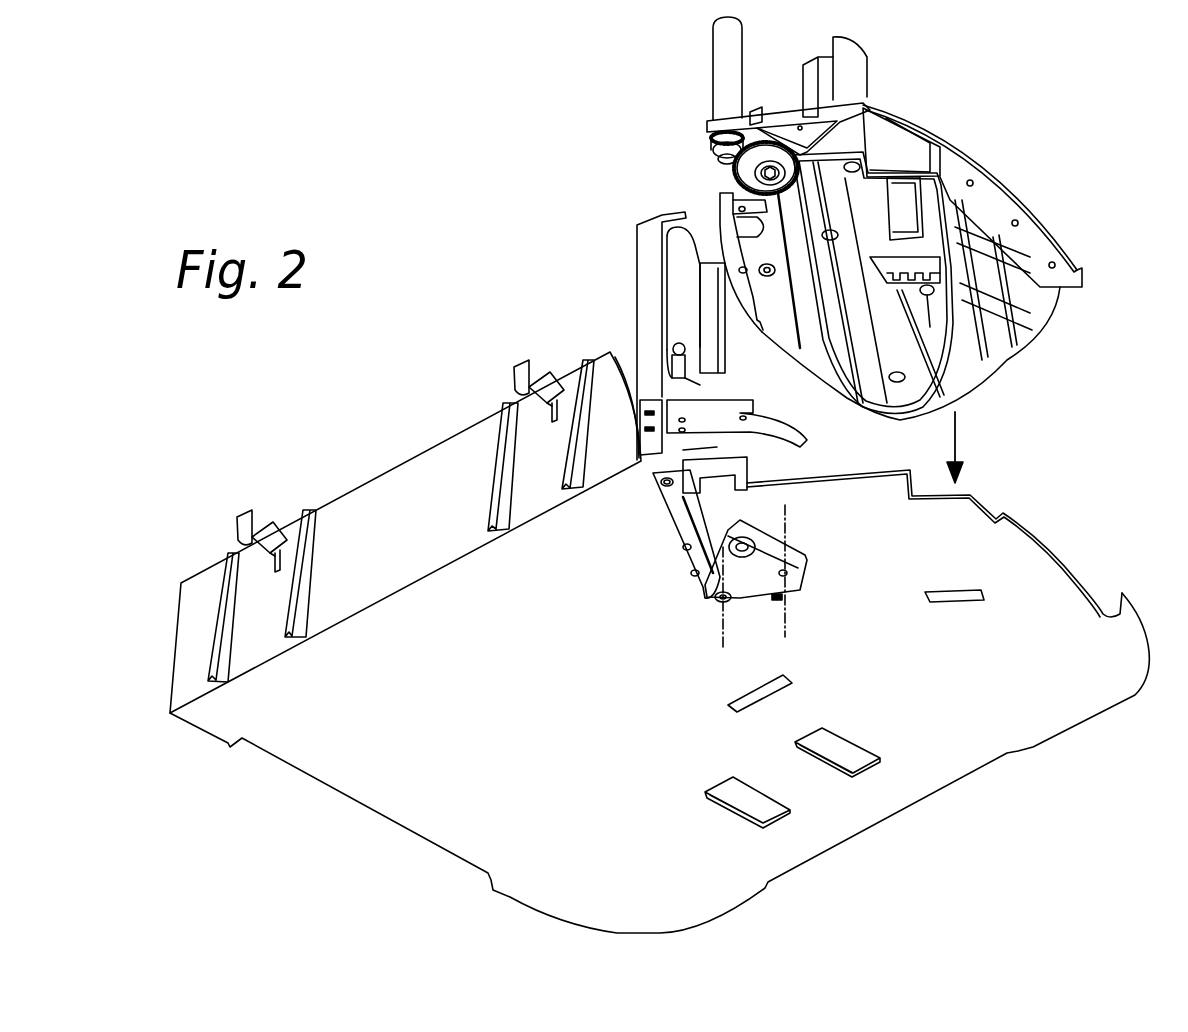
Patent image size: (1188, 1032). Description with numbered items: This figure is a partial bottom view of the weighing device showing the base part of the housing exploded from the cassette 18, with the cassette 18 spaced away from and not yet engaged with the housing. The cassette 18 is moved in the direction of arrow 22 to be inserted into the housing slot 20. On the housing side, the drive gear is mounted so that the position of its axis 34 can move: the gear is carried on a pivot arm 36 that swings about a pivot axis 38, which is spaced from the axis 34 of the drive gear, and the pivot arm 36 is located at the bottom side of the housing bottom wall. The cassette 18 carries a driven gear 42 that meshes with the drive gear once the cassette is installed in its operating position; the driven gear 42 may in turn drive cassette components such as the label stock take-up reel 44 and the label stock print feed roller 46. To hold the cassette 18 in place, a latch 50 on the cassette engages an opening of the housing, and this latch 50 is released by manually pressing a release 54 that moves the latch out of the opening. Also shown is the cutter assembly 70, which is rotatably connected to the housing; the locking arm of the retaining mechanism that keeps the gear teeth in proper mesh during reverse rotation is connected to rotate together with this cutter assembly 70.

The cassette 18 is at (875, 218).
The housing slot 20 is at (1056, 541).
The arrow 22 is at (955, 437).
The axis of the drive gear 34 is at (788, 530).
The pivot arm 36 is at (755, 578).
The pivot axis 38 is at (725, 622).
The driven gear 42 is at (750, 173).
The label stock take-up reel 44 is at (876, 72).
The label stock print feed roller 46 is at (727, 68).
The latch 50 is at (918, 284).
The release 54 is at (890, 147).
The cutter assembly 70 is at (633, 300).